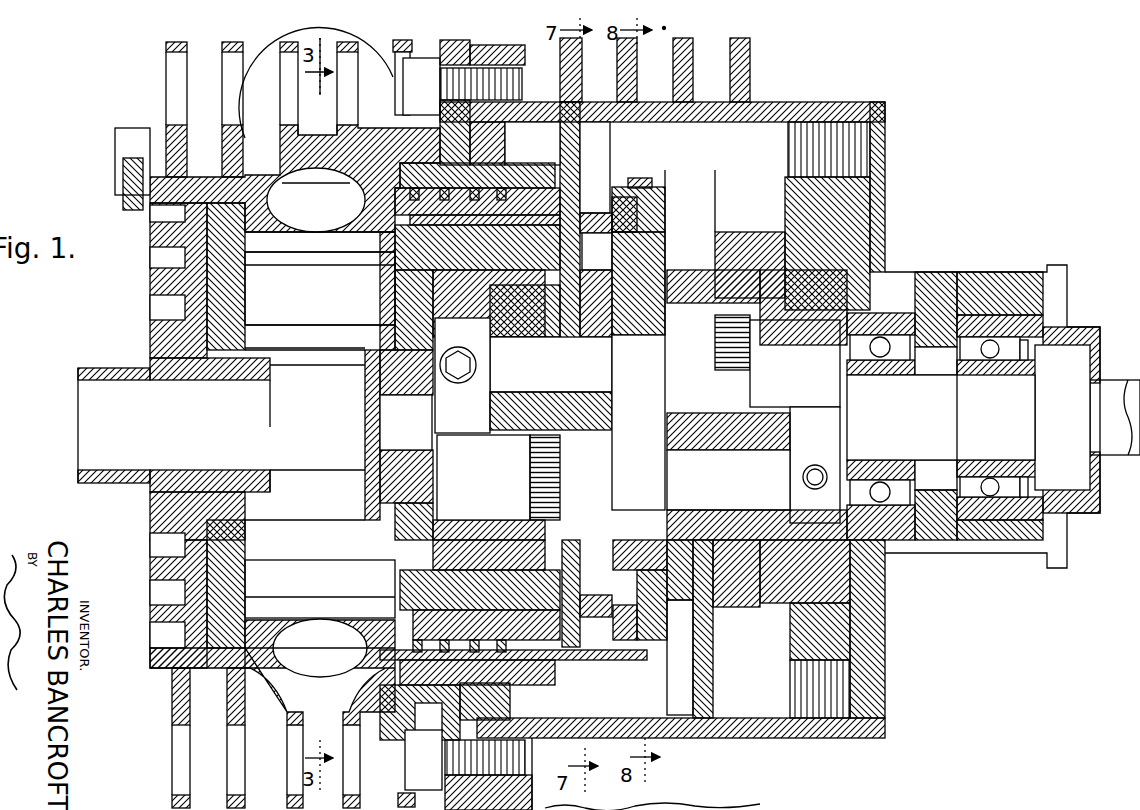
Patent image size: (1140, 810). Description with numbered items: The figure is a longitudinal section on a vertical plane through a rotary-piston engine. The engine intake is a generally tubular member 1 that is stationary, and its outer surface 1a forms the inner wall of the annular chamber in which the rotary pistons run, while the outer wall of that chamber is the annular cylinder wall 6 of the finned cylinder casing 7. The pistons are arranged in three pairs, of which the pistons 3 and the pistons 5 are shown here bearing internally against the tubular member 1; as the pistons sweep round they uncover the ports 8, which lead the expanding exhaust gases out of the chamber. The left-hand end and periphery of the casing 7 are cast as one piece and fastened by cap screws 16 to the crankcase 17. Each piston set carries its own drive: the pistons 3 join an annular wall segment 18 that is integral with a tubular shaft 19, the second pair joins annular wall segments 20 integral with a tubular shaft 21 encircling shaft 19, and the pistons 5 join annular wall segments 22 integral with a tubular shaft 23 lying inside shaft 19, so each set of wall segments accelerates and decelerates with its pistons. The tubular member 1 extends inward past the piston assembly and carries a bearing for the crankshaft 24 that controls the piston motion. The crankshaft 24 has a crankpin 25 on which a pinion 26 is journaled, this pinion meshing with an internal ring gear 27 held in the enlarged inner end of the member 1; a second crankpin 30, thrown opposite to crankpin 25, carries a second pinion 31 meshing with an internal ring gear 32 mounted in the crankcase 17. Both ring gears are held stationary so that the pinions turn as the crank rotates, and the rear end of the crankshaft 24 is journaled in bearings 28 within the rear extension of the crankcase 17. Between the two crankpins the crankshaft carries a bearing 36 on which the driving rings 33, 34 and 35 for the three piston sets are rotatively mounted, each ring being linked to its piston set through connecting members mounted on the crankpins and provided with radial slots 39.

The tubular member 1 is at (176, 370).
The outer surface of the tubular member 1a is at (368, 372).
The rotary pistons 3 is at (327, 562).
The rotary pistons 5 is at (326, 302).
The annular cylinder wall 6 is at (270, 648).
The finned cylinder casing 7 is at (168, 678).
The ports 8 is at (319, 422).
The cap screws 16 is at (434, 778).
The crankcase 17 is at (778, 102).
The annular wall segment 18 is at (320, 270).
The tubular shaft 19 is at (477, 412).
The annular wall segments 20 is at (250, 229).
The tubular shaft 21 is at (486, 200).
The annular wall segments 22 is at (246, 308).
The tubular shaft 23 is at (496, 420).
The crankshaft 24 is at (368, 437).
The crankpin 25 is at (545, 376).
The pinion 26 is at (545, 420).
The internal ring gear 27 is at (530, 465).
The bearings 28 is at (882, 336).
The second crankpin 30 is at (732, 482).
The second pinion 31 is at (760, 408).
The internal ring gear 32 is at (740, 356).
The driving ring 33 is at (650, 312).
The driving ring 34 is at (645, 262).
The driving ring 35 is at (630, 215).
The bearing 36 is at (652, 446).
The radial slots 39 is at (600, 158).